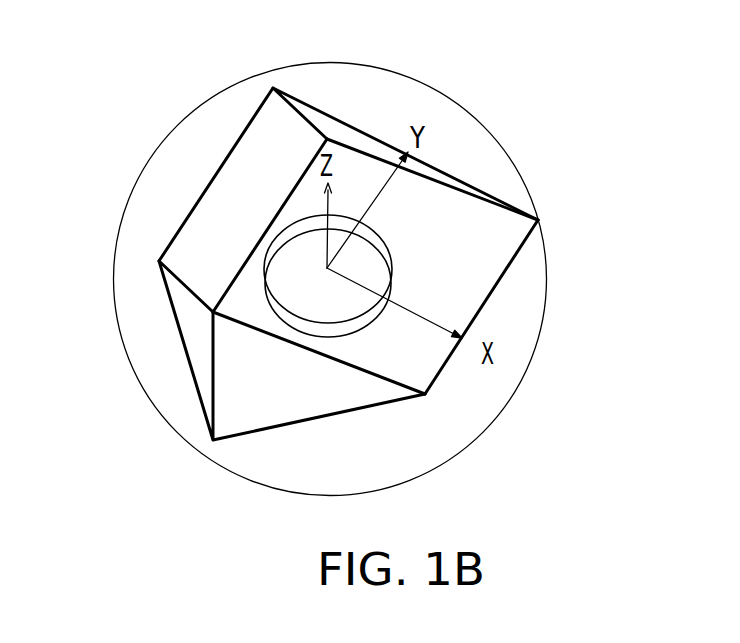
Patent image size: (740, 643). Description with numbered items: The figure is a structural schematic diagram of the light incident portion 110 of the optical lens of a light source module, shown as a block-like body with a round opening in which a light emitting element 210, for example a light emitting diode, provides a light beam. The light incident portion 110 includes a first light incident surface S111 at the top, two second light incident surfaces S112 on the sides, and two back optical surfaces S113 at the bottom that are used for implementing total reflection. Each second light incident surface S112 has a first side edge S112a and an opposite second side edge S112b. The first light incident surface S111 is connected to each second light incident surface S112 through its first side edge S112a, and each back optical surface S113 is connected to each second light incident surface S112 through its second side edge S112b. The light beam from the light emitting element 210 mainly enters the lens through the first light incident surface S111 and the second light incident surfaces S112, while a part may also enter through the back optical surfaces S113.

The light incident portion 110 is at (548, 283).
The light emitting element 210 is at (320, 298).
The first light incident surface S111 is at (340, 128).
The second light incident surface S112 is at (221, 196).
The first side edge S112a is at (477, 192).
The second side edge S112b is at (370, 375).
The back optical surface S113 is at (229, 389).